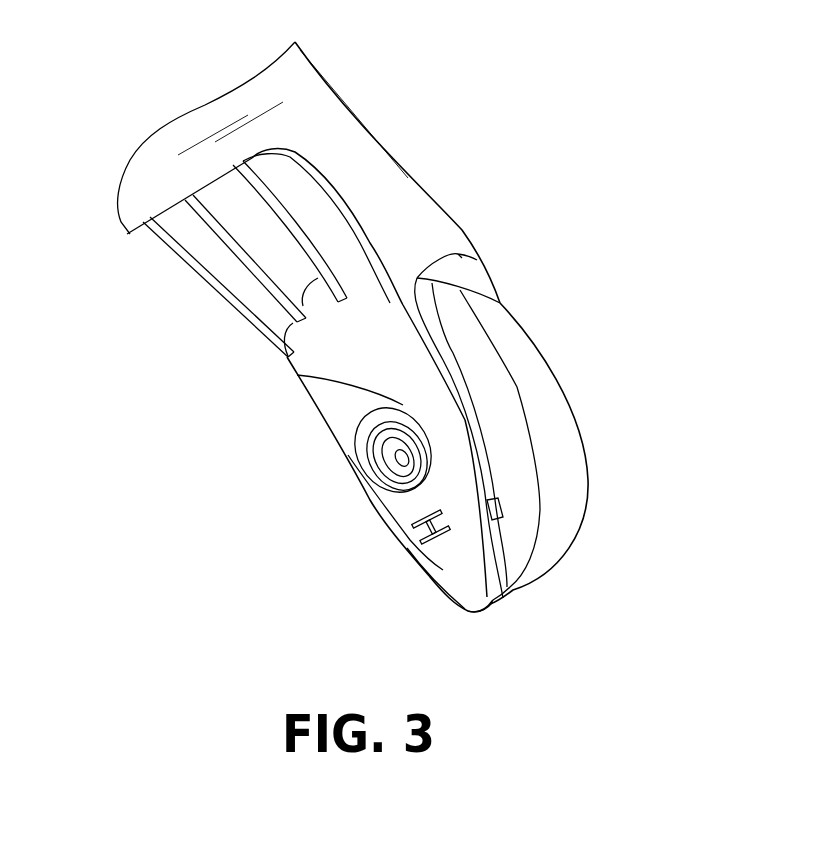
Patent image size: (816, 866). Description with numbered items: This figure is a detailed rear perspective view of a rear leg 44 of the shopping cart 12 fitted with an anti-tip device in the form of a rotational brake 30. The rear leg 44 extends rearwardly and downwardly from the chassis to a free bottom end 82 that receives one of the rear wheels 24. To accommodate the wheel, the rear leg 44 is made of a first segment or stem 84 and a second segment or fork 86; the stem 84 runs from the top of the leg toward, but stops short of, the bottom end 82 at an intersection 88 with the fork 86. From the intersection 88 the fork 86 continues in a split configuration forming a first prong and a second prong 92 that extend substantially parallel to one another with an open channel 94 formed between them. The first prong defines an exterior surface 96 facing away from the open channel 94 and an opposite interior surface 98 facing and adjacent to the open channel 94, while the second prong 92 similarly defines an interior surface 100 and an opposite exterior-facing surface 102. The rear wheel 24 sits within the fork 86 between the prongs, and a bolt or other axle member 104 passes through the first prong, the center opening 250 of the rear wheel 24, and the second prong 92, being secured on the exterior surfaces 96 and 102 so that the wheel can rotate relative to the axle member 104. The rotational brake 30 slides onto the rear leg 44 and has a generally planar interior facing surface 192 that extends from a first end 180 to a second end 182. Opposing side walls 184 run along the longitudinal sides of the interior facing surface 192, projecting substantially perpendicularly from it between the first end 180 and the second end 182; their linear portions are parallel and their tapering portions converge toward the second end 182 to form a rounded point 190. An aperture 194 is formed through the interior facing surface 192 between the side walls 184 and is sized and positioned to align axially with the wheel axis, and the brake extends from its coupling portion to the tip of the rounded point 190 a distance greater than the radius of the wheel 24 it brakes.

The handle 12 is at (135, 193).
The rear wheel 24 is at (568, 462).
The rotational brake 30 is at (465, 612).
The rear leg 44 is at (302, 123).
The bottom end 82 is at (487, 507).
The stem 84 is at (345, 152).
The fork 86 is at (500, 285).
The intersection 88 is at (412, 237).
The second prong 92 is at (325, 395).
The open channel 94 is at (448, 298).
The exterior surface 96 is at (487, 263).
The interior surface 98 is at (458, 273).
The interior surface 100 is at (335, 418).
The exterior-facing surface 102 is at (483, 427).
The axle member 104 is at (397, 450).
The first end 180 is at (297, 375).
The second end 182 is at (493, 598).
The side walls 184 is at (462, 485).
The rounded point 190 is at (493, 612).
The interior facing surface 192 is at (442, 570).
The aperture 194 is at (395, 447).
The center opening 250 is at (392, 452).